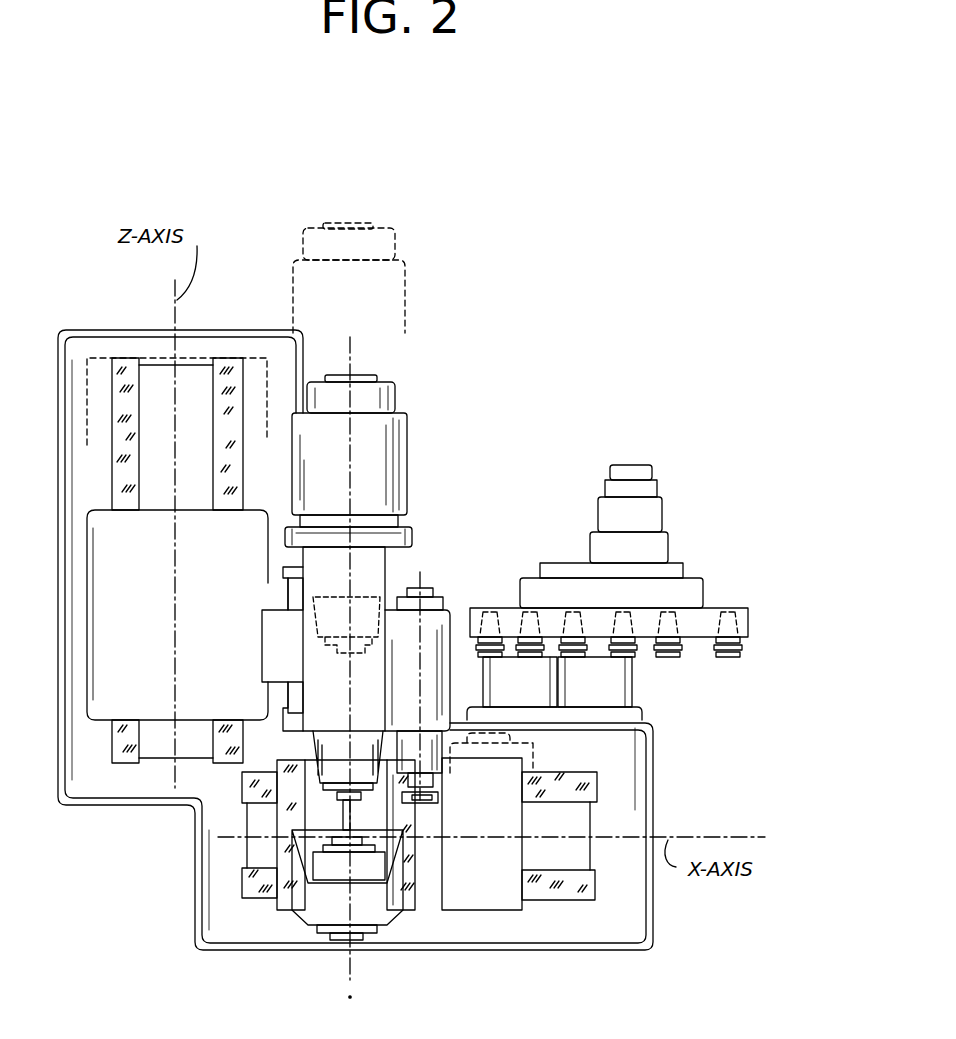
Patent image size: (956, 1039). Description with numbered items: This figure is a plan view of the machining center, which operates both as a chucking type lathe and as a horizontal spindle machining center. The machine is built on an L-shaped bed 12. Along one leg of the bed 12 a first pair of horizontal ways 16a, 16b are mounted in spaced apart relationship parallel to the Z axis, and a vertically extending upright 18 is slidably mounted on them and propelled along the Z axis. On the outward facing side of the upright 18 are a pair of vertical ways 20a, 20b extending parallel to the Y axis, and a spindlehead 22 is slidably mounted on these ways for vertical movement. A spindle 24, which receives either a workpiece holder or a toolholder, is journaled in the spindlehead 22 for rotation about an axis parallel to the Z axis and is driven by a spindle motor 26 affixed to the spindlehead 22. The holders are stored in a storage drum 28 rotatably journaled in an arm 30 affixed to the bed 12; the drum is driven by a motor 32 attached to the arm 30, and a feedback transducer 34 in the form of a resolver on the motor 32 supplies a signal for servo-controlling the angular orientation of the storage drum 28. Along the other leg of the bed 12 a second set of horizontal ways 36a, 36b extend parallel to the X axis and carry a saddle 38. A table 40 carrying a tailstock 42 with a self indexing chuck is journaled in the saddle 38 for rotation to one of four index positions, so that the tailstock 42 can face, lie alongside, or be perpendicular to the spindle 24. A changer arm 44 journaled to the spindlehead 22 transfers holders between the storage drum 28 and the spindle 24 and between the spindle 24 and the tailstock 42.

The bed 12 is at (603, 952).
The horizontal way 16a is at (124, 372).
The horizontal way 16b is at (222, 372).
The upright 18 is at (125, 688).
The vertical way 20a is at (287, 597).
The vertical way 20b is at (288, 697).
The spindlehead 22 is at (373, 568).
The spindle 24 is at (357, 806).
The spindle motor 26 is at (418, 468).
The storage drum 28 is at (779, 574).
The arm 30 is at (627, 686).
The motor 32 is at (645, 510).
The feedback transducer 34 is at (634, 468).
The horizontal way 36a is at (593, 792).
The horizontal way 36b is at (593, 890).
The saddle 38 is at (488, 893).
The table 40 is at (410, 907).
The tailstock 42 is at (328, 912).
The changer arm 44 is at (438, 797).